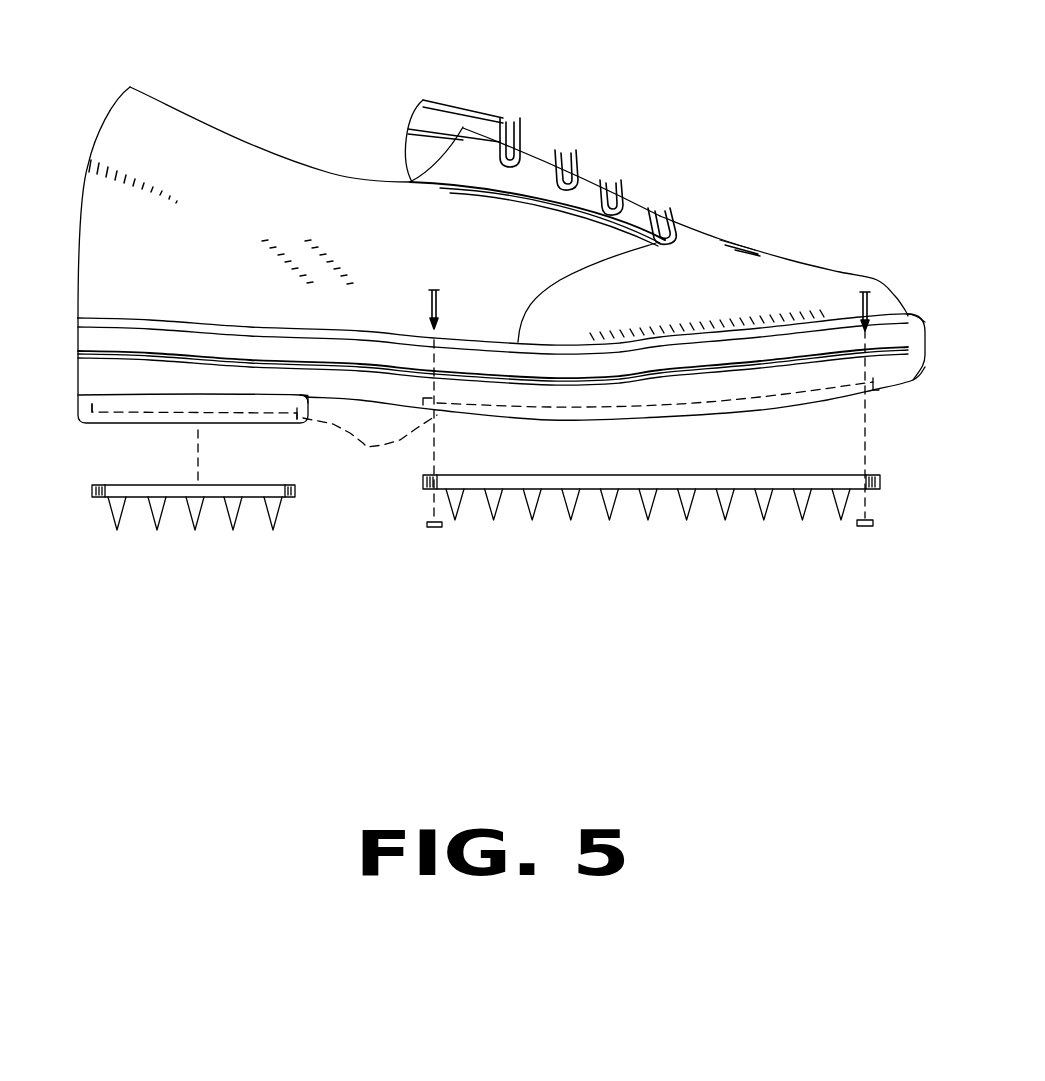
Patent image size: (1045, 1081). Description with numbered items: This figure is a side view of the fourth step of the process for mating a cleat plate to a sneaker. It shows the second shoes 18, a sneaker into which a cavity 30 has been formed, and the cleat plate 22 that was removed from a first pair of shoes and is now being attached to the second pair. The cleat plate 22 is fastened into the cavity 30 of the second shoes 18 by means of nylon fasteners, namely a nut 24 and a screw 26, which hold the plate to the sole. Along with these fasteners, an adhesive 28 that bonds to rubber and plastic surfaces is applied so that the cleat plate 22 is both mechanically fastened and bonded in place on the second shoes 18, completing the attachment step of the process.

The second shoes 18 is at (383, 193).
The cleat plate 22 is at (212, 500).
The nut 24 is at (432, 528).
The screw 26 is at (440, 310).
The adhesive 28 is at (167, 485).
The cavity 30 is at (370, 451).